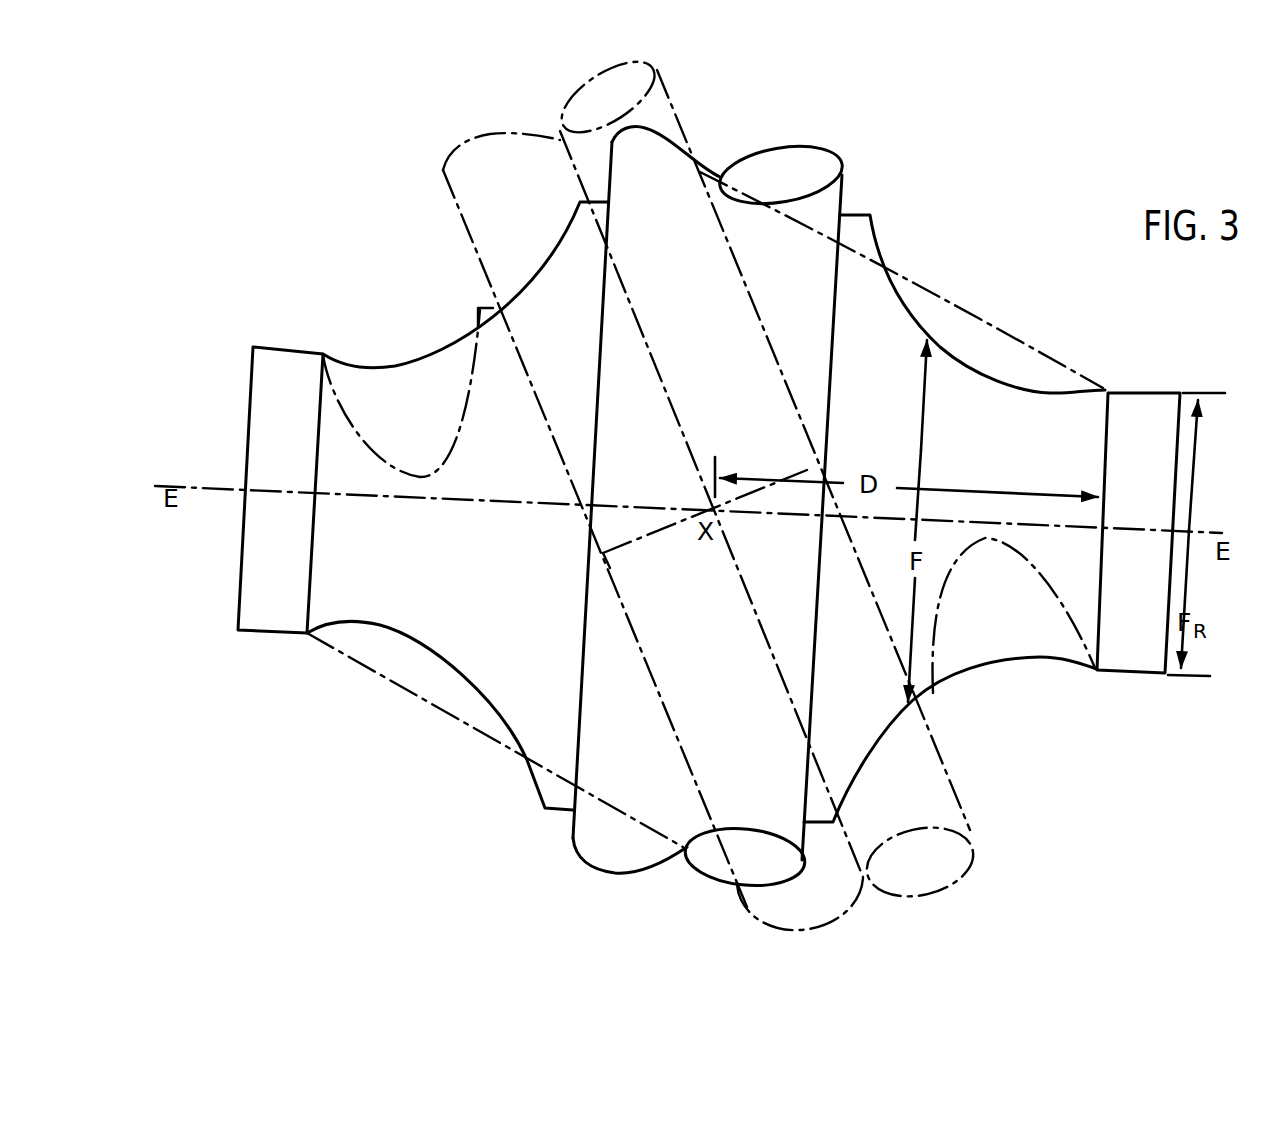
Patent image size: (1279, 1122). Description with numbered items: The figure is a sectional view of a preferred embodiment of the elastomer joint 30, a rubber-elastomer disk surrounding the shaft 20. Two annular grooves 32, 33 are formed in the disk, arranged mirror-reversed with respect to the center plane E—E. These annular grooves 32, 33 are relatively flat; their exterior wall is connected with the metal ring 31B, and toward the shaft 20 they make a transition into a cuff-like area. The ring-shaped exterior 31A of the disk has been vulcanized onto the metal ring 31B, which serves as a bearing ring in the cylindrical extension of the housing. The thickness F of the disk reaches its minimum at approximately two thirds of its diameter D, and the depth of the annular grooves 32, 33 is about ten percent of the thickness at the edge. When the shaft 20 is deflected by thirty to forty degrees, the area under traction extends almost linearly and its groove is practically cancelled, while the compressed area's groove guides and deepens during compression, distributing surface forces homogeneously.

The shaft 20 is at (851, 181).
The elastomer joint 30 is at (895, 431).
The ring-shaped exterior 31A is at (1105, 473).
The metal ring 31B is at (1158, 584).
The annular groove 32 is at (411, 410).
The annular groove 33 is at (416, 691).